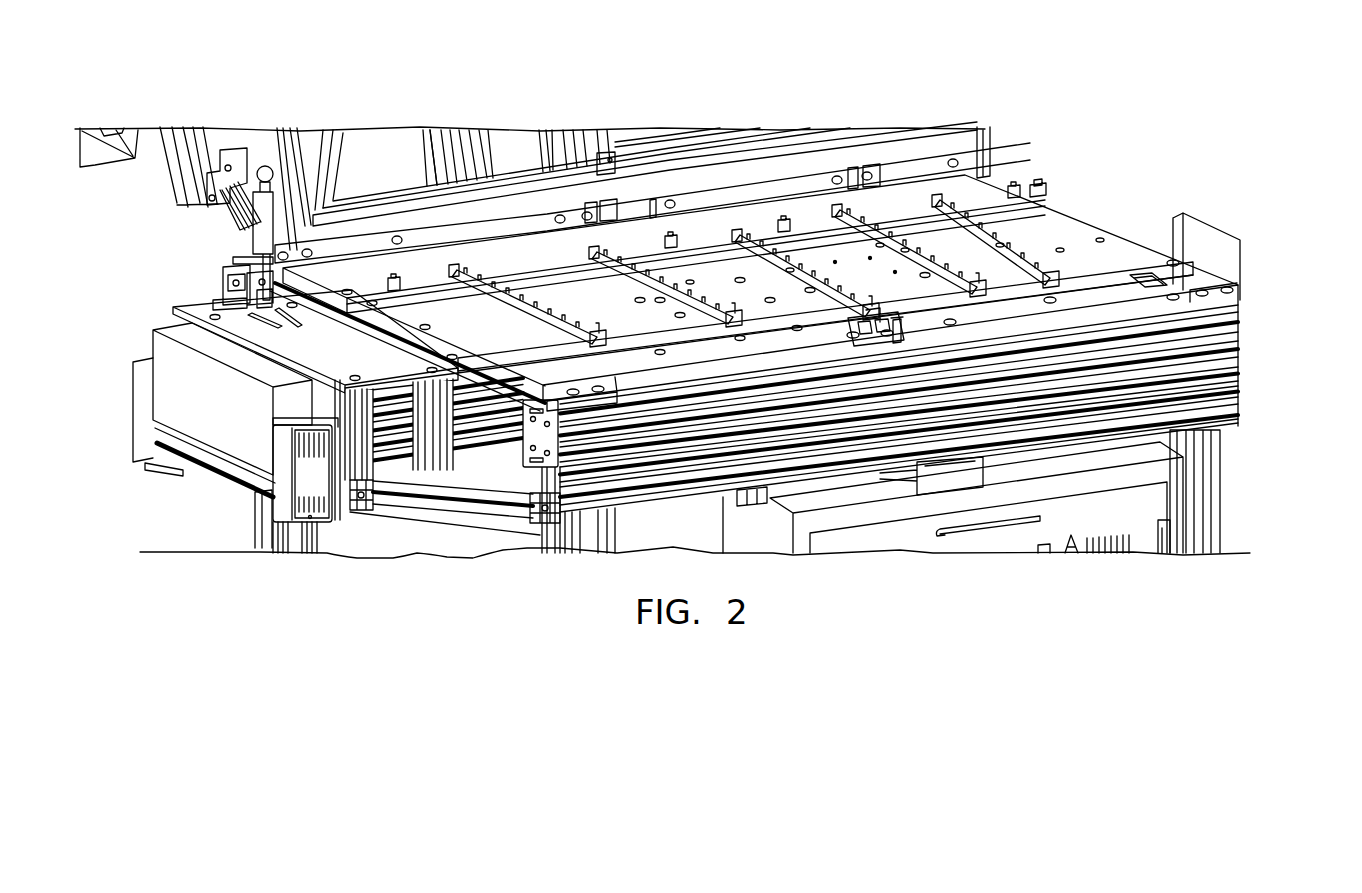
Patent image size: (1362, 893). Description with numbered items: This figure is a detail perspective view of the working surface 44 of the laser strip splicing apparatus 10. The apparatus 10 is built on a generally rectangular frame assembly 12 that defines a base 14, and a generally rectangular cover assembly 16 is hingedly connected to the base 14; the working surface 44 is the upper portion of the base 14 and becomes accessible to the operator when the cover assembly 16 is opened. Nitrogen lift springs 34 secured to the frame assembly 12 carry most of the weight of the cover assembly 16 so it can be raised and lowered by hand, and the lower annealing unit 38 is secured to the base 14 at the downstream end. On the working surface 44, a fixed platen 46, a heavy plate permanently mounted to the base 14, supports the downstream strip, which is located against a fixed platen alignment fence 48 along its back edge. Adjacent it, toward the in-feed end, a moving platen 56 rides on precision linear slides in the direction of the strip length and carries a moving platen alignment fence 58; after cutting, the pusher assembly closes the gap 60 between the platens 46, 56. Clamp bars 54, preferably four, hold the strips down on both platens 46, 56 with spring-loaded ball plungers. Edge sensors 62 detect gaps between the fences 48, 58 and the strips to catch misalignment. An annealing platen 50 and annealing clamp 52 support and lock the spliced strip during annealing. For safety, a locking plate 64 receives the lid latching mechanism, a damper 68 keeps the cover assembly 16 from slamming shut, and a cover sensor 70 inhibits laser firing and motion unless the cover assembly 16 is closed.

The apparatus 10 is at (1022, 91).
The frame assembly 12 is at (1232, 502).
The base 14 is at (1250, 290).
The cover assembly 16 is at (151, 199).
The nitrogen lift springs 34 is at (260, 237).
The lower annealing unit 38 is at (215, 428).
The working surface 44 is at (1090, 204).
The fixed platen 46 is at (715, 265).
The fixed platen alignment fence 48 is at (535, 268).
The annealing platen 50 is at (365, 350).
The annealing clamp 52 is at (237, 293).
The clamp bars 54 is at (643, 278).
The moving platen 56 is at (820, 248).
The moving platen alignment fence 58 is at (1032, 192).
The gap 60 is at (760, 257).
The edge sensors 62 is at (394, 282).
The locking plate 64 is at (850, 330).
The damper 68 is at (900, 328).
The cover sensor 70 is at (1142, 277).